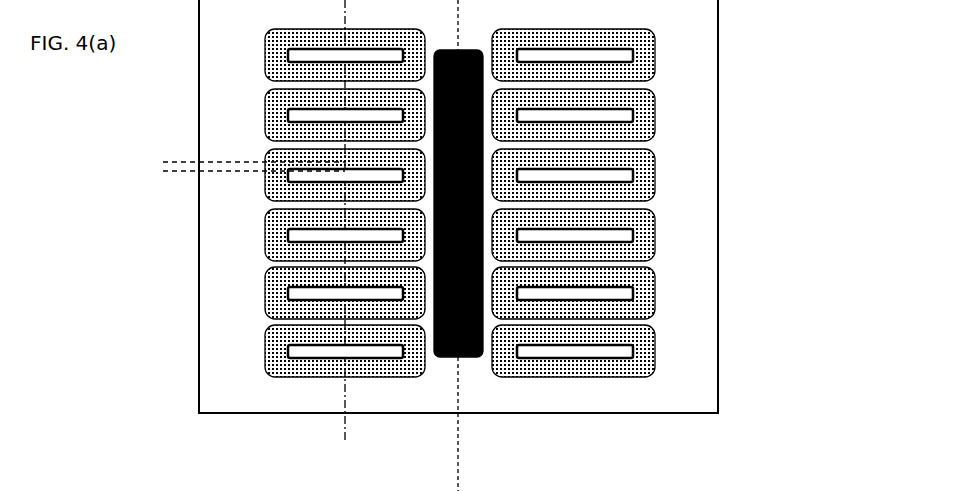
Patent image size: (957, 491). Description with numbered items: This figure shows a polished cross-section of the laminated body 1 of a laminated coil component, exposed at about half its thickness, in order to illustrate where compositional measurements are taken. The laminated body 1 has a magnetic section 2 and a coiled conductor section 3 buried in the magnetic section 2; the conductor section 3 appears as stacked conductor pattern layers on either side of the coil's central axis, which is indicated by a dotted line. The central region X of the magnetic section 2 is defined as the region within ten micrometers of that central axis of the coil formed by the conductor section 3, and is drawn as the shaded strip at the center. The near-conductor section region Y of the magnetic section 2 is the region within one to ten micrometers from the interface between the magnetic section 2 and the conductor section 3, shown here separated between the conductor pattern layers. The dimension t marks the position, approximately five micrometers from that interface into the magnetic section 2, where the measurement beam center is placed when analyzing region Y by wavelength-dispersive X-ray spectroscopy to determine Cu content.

The laminated body 1 is at (538, 206).
The magnetic section 2 is at (712, 228).
The conductor section 3 is at (623, 233).
The central region X is at (467, 358).
The near-conductor section region Y is at (657, 71).
The distance from the interface t is at (183, 123).